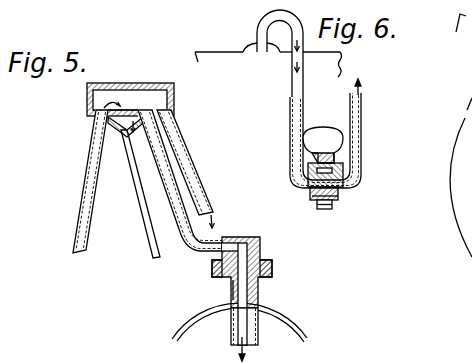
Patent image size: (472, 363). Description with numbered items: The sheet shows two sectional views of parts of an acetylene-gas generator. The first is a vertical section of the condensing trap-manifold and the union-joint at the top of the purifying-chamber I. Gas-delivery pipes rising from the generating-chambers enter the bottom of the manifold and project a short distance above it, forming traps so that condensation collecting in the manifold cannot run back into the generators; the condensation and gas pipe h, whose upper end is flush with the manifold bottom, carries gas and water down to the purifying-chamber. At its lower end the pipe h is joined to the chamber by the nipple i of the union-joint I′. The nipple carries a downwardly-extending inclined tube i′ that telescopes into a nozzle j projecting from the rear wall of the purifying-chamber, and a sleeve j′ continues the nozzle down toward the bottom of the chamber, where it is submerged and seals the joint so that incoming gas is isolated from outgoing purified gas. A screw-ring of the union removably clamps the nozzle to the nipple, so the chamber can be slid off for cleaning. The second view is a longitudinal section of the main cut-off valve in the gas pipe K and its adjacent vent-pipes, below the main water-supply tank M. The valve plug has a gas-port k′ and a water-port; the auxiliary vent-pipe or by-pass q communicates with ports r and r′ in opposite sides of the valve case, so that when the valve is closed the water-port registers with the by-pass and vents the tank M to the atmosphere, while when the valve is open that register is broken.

In FIG. 5, the head casing E is at (130, 107).
In FIG. 5, the condensation and gas pipe h is at (185, 241).
In FIG. 5, the union-joint I′ is at (215, 262).
In FIG. 5, the nipple i is at (252, 289).
In FIG. 5, the tube i′ is at (248, 295).
In FIG. 5, the nozzle j is at (233, 284).
In FIG. 5, the tube or sleeve j′ is at (257, 336).
In FIG. 6, the main water-supply tank M is at (268, 60).
In FIG. 6, the auxiliary vent-pipe or by-pass q is at (290, 103).
In FIG. 6, the gas-delivery pipe K is at (337, 103).
In FIG. 6, the gas-port of valve plug k′ is at (343, 172).
In FIG. 6, the by-pass port r′ is at (350, 186).
In FIG. 6, the by-pass port r is at (308, 190).